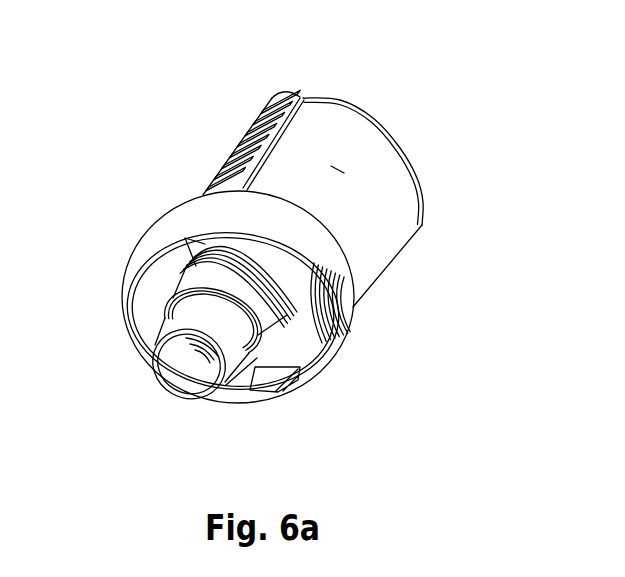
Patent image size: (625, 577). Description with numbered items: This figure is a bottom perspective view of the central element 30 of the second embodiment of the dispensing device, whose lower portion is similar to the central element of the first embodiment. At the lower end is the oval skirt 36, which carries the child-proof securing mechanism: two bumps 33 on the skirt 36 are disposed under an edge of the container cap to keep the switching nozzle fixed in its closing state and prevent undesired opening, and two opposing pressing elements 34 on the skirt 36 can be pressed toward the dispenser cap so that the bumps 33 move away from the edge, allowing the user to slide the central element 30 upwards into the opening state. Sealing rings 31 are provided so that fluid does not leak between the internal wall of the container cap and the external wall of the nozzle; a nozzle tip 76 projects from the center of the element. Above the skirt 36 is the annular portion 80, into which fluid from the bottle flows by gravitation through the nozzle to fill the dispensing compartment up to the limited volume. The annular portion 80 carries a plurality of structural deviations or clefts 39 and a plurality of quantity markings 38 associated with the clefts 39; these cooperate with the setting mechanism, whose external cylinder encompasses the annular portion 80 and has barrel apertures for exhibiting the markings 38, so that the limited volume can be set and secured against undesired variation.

The central element 30 is at (120, 85).
The sealing rings 31 is at (290, 320).
The bumps 33 is at (262, 382).
The pressing elements 34 is at (347, 308).
The skirt 36 is at (173, 223).
The quantity markings 38 is at (343, 172).
The clefts 39 is at (288, 114).
The nozzle 76 is at (183, 307).
The annular portion 80 is at (382, 263).